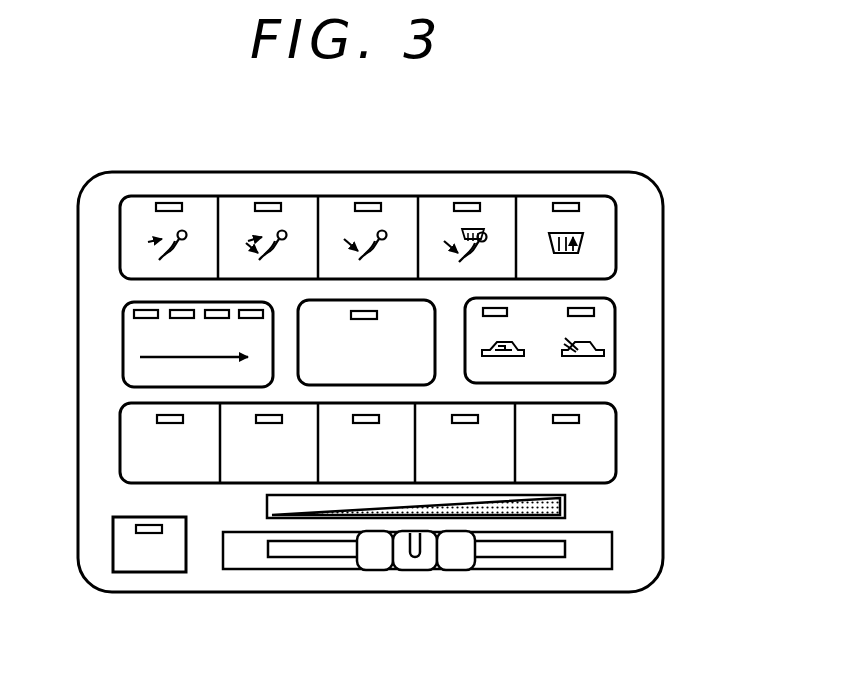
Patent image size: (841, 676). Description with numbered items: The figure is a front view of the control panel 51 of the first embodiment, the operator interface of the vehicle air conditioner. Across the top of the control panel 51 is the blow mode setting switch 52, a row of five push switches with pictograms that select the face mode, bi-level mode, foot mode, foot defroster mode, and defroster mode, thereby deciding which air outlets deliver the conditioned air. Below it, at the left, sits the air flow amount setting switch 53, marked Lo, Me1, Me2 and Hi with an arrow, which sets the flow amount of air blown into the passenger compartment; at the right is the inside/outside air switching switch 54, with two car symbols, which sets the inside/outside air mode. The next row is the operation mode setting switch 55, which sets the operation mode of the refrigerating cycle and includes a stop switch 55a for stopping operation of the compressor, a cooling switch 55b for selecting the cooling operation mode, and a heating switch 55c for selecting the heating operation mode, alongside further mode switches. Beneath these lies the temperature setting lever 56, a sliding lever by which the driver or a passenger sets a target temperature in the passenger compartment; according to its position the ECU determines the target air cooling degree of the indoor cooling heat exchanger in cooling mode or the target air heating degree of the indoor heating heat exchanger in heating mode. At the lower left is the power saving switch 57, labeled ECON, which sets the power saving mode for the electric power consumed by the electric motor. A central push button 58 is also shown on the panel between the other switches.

The control panel 51 is at (498, 138).
The blow mode setting switch 52 is at (546, 189).
The air flow amount setting switch 53 is at (125, 330).
The inside/outside air switching switch 54 is at (605, 329).
The operation mode setting switch 55 is at (625, 425).
The stop switch 55a is at (207, 484).
The cooling switch 55b is at (249, 484).
The heating switch 55c is at (362, 484).
The temperature setting lever 56 is at (425, 560).
The power saving switch 57 is at (132, 560).
The auto switch 58 is at (332, 300).